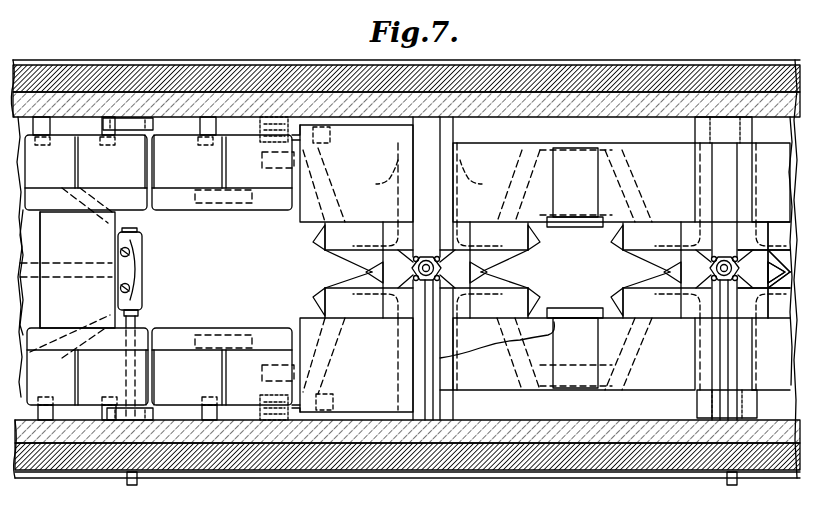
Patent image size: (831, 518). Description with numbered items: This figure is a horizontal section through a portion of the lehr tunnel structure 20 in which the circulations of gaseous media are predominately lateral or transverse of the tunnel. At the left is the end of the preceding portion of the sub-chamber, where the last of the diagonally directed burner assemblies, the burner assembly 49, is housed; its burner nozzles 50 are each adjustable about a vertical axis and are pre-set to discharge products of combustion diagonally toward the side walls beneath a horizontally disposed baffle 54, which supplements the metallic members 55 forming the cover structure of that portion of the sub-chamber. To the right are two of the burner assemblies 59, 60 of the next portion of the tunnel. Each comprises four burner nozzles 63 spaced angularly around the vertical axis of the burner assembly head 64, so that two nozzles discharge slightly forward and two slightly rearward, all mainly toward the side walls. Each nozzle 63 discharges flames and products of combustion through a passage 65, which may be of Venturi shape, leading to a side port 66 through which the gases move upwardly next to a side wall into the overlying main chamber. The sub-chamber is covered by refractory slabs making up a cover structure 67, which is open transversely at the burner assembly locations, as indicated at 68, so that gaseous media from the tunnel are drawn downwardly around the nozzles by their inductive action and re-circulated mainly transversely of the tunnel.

The tunnel structure 20 is at (558, 62).
The burner assembly 49 is at (142, 268).
The burner nozzle 50 is at (131, 243).
The baffle 54 is at (99, 300).
The metallic member 55 is at (183, 208).
The burner assembly 59 is at (431, 249).
The burner assembly 60 is at (728, 252).
The burner nozzle 63 is at (441, 262).
The burner assembly head 64 is at (426, 252).
The passage 65 is at (400, 190).
The side port 66 is at (348, 120).
The cover structure 67 is at (356, 268).
The transverse opening 68 is at (436, 177).